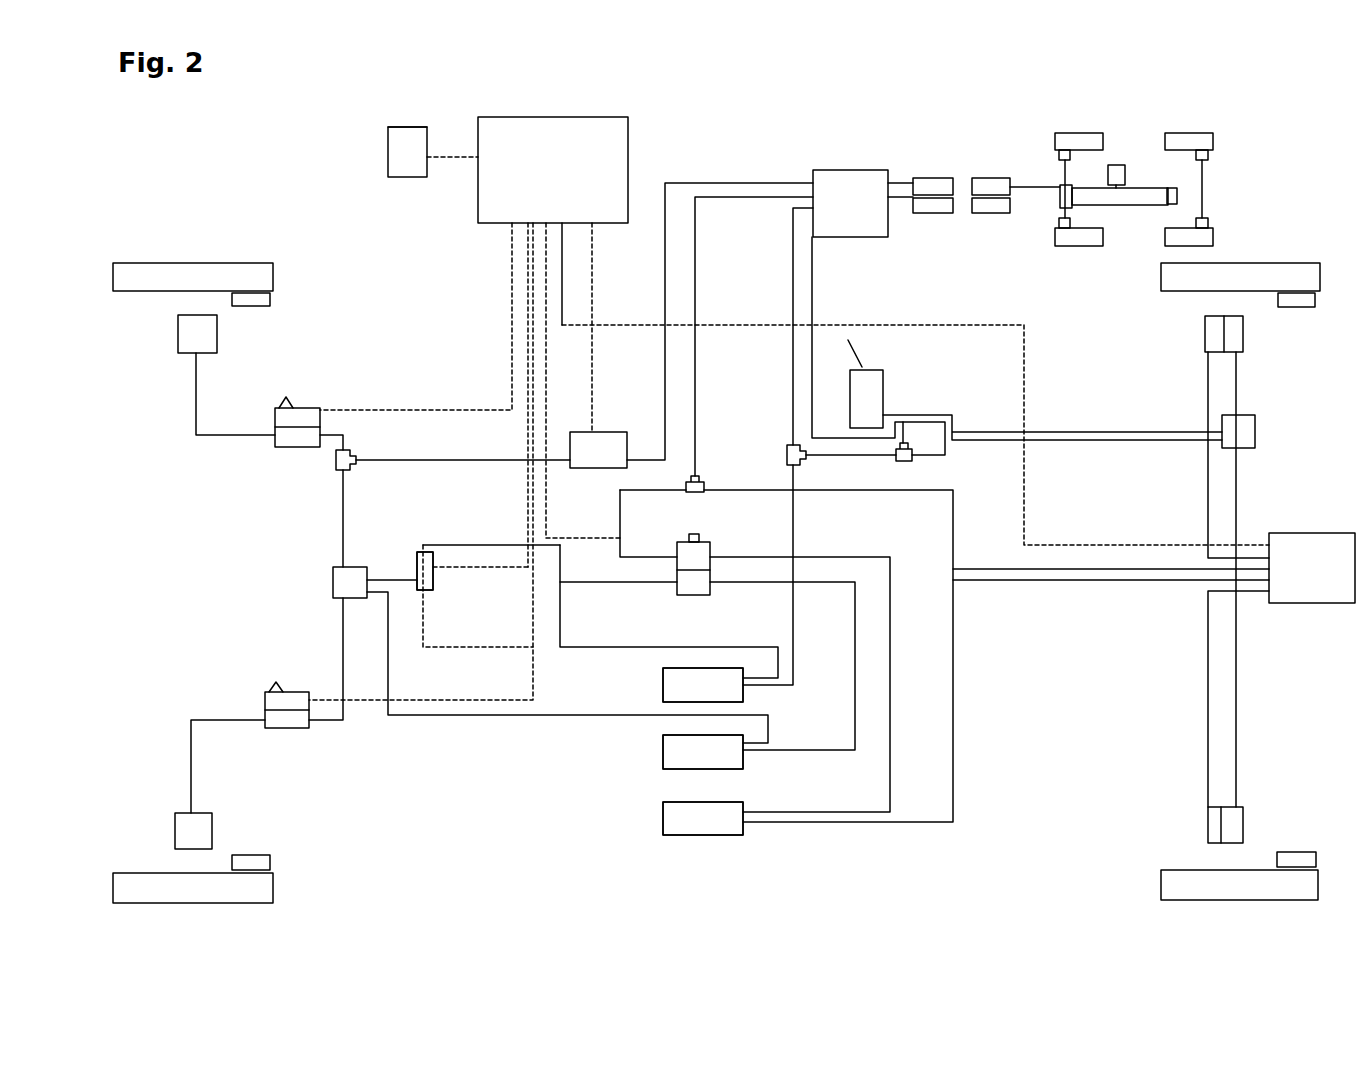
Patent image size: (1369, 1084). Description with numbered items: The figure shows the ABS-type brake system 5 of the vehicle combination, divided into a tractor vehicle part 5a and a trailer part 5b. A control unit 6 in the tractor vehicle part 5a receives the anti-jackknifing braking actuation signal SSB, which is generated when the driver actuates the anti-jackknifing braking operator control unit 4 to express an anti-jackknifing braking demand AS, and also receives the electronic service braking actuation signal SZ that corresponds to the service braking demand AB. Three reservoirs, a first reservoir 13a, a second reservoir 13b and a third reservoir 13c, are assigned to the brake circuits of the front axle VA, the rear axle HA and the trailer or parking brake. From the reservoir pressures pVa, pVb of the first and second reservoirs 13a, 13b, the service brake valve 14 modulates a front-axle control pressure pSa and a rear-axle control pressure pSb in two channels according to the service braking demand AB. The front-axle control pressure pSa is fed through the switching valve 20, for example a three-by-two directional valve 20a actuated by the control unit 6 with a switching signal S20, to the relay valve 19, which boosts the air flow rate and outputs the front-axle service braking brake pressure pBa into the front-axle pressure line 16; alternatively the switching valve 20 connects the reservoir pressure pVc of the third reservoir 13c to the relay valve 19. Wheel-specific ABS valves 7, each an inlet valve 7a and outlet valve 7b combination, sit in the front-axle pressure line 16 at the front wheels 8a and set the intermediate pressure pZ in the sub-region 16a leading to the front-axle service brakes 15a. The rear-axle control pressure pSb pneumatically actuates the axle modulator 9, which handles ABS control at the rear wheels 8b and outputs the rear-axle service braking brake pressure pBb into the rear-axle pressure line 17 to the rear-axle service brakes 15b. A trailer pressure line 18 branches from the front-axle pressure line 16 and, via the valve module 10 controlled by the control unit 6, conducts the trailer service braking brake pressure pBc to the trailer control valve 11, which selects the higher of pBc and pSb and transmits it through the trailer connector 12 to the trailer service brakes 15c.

The anti-jackknifing braking operator control unit 4 is at (388, 167).
The brake system 5 is at (714, 106).
The tractor vehicle part 5a is at (306, 181).
The trailer part 5b is at (1140, 108).
The control unit 6 is at (538, 117).
The ABS valve 7 is at (297, 405).
The inlet valve 7a is at (290, 447).
The outlet valve 7b is at (275, 422).
The front wheels 8a is at (172, 269).
The rear wheels 8b is at (1248, 276).
The axle modulator 9 is at (1295, 531).
The valve module 10 is at (602, 430).
The trailer control valve 11 is at (846, 172).
The trailer connector 12 is at (965, 161).
The first reservoir 13a is at (663, 752).
The second reservoir 13b is at (663, 825).
The third reservoir 13c is at (663, 688).
The service brake valve 14 is at (692, 597).
The front-axle service brakes 15a is at (188, 335).
The rear-axle service brakes 15b is at (1243, 338).
The trailer service brakes 15c is at (1060, 155).
The front-axle pressure line 16 is at (343, 516).
The sub-region 16a is at (225, 437).
The rear-axle pressure line 17 is at (1208, 530).
The trailer pressure line 18 is at (430, 458).
The relay valve 19 is at (333, 581).
The switching valve 20 is at (419, 590).
The 3/2 directional valve 20a is at (425, 571).
The anti-jackknifing braking demand AS is at (390, 118).
The anti-jackknifing braking actuation signal SSB is at (446, 163).
The trailer service braking brake pressure pBc is at (673, 178).
The front-axle service braking brake pressure pBa is at (383, 502).
The rear-axle service braking brake pressure pBb is at (1207, 492).
The intermediate pressure pZ is at (194, 412).
The front-axle control pressure pSa is at (582, 586).
The rear-axle control pressure pSb is at (620, 537).
The electronic service braking actuation signal SZ is at (544, 527).
The switching signal S20 is at (506, 575).
The service braking demand AB is at (663, 502).
The front axle VA is at (128, 518).
The rear axle HA is at (1320, 725).
The reservoir pressure of first reservoir pVa is at (703, 752).
The reservoir pressure of second reservoir pVb is at (703, 818).
The reservoir pressure of third reservoir pVc is at (703, 685).